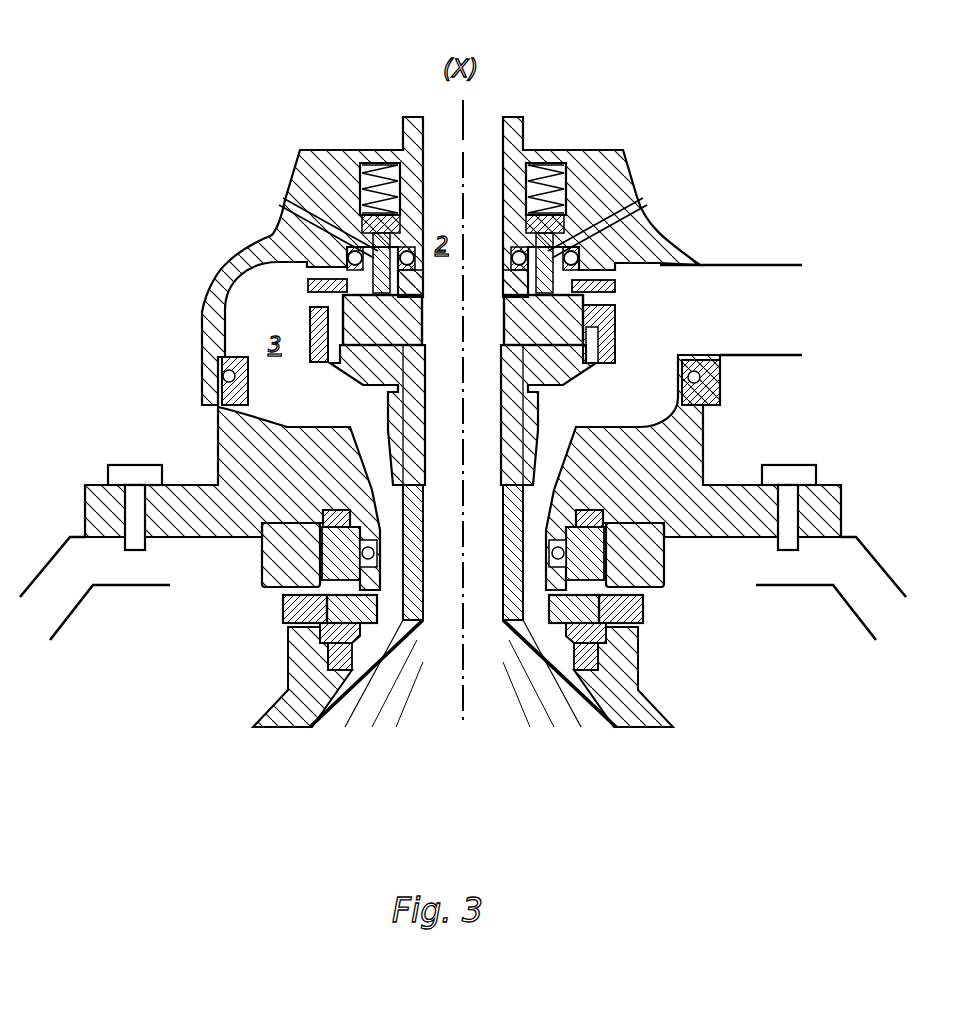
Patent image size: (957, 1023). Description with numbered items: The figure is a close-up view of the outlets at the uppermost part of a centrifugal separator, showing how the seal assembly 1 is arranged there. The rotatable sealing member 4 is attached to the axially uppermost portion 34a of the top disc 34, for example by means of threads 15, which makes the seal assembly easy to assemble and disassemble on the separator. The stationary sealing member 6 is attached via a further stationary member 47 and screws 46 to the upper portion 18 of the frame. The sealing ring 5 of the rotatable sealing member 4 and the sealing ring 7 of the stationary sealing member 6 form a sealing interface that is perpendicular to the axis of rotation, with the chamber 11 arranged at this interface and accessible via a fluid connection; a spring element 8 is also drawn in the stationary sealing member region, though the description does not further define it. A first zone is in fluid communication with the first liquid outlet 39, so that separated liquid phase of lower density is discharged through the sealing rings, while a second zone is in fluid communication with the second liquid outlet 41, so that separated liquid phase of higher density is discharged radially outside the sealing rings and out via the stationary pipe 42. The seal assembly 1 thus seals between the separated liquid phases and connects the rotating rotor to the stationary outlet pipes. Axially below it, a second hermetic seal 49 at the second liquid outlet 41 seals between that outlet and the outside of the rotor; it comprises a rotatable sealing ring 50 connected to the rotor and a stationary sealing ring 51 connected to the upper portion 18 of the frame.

The seal assembly 1 is at (290, 302).
The rotatable sealing member 4 is at (317, 367).
The sealing ring 5 is at (560, 317).
The stationary sealing member 6 is at (287, 218).
The sealing ring 7 is at (550, 260).
The spring 8 is at (543, 145).
The chamber 11 is at (382, 245).
The threads 15 is at (290, 185).
The upper portion of the frame 18 is at (866, 590).
The top disc 34 is at (576, 722).
The axially uppermost portion of the top disc 34a is at (412, 545).
The first liquid outlet 39 is at (478, 147).
The second liquid outlet 41 is at (575, 660).
The stationary pipe 42 is at (783, 264).
The screws 46 is at (795, 470).
The further stationary member 47 is at (693, 450).
The second hermetic seal 49 is at (240, 603).
The rotatable sealing ring 50 is at (333, 632).
The stationary sealing ring 51 is at (283, 563).